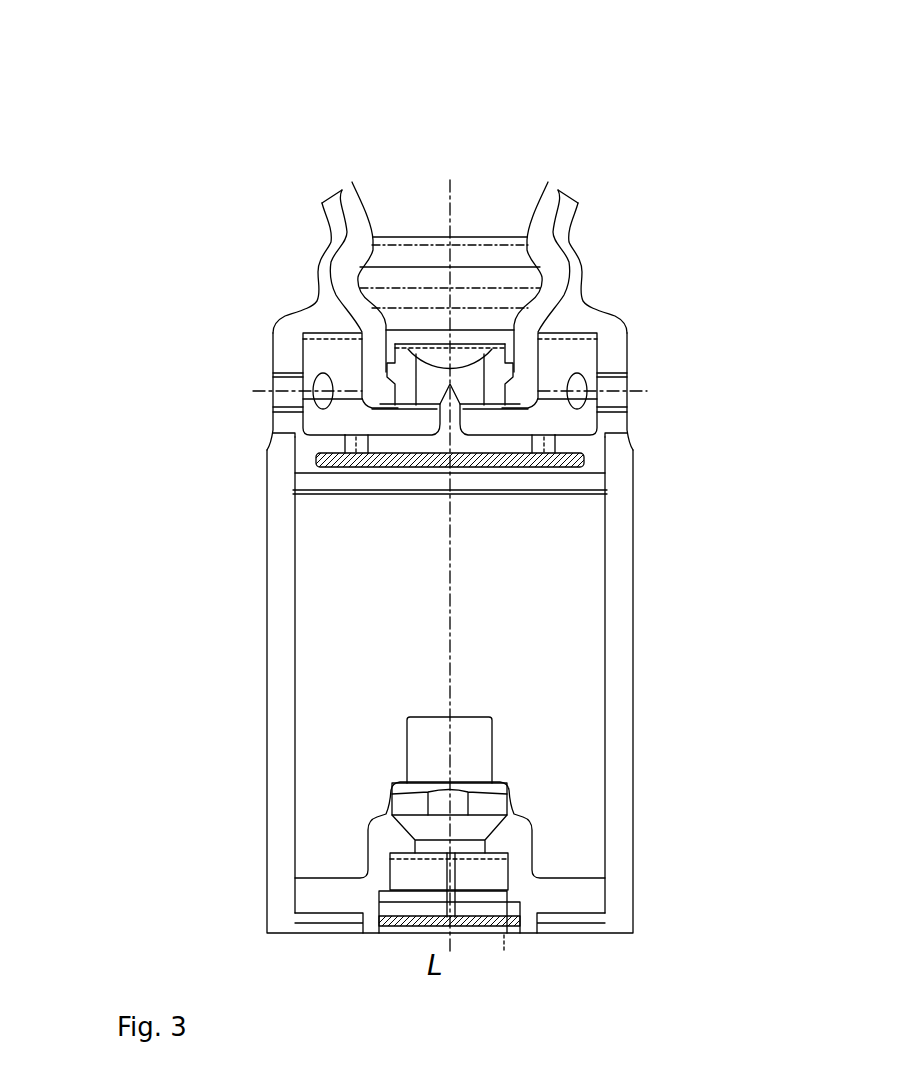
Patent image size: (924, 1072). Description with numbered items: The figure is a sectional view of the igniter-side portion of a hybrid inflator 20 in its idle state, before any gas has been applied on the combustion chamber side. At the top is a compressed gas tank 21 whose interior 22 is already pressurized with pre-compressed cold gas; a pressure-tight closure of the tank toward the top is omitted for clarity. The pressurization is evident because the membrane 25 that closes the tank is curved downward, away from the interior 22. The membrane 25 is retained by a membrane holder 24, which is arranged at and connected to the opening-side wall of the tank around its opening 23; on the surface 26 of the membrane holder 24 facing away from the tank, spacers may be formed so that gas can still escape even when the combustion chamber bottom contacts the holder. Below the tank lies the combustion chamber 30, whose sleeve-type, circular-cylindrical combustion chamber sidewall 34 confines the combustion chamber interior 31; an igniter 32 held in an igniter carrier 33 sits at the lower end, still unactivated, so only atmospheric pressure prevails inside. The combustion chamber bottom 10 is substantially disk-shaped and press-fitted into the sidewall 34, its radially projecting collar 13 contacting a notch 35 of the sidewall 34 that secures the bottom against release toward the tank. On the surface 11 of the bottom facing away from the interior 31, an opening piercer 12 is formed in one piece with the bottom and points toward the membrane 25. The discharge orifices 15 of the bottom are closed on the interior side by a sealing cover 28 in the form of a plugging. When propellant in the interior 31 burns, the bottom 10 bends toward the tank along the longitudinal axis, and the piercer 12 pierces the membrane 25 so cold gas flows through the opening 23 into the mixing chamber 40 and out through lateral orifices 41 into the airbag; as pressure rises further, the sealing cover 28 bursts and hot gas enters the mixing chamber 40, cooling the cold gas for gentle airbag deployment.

The combustion chamber bottom 10 is at (600, 433).
The surface of the combustion chamber bottom facing away from the combustion chamber 11 is at (300, 400).
The opening piercer 12 is at (295, 410).
The collar 13 is at (285, 433).
The discharge orifices 15 is at (300, 420).
The hybrid inflator 20 is at (703, 178).
The compressed gas tank 21 is at (343, 200).
The interior of the compressed gas tank 22 is at (500, 213).
The opening of the compressed gas tank 23 is at (382, 410).
The membrane holder 24 is at (382, 395).
The membrane 25 is at (428, 370).
The surface of the membrane holder facing away from the compressed gas tank 26 is at (533, 410).
The sealing cover 28 is at (632, 495).
The combustion chamber 30 is at (672, 643).
The combustion chamber interior 31 is at (580, 742).
The igniter 32 is at (482, 820).
The igniter carrier 33 is at (572, 905).
The combustion chamber sidewall 34 is at (268, 822).
The notch 35 is at (630, 436).
The mixing chamber 40 is at (565, 348).
The lateral orifices 41 is at (290, 388).